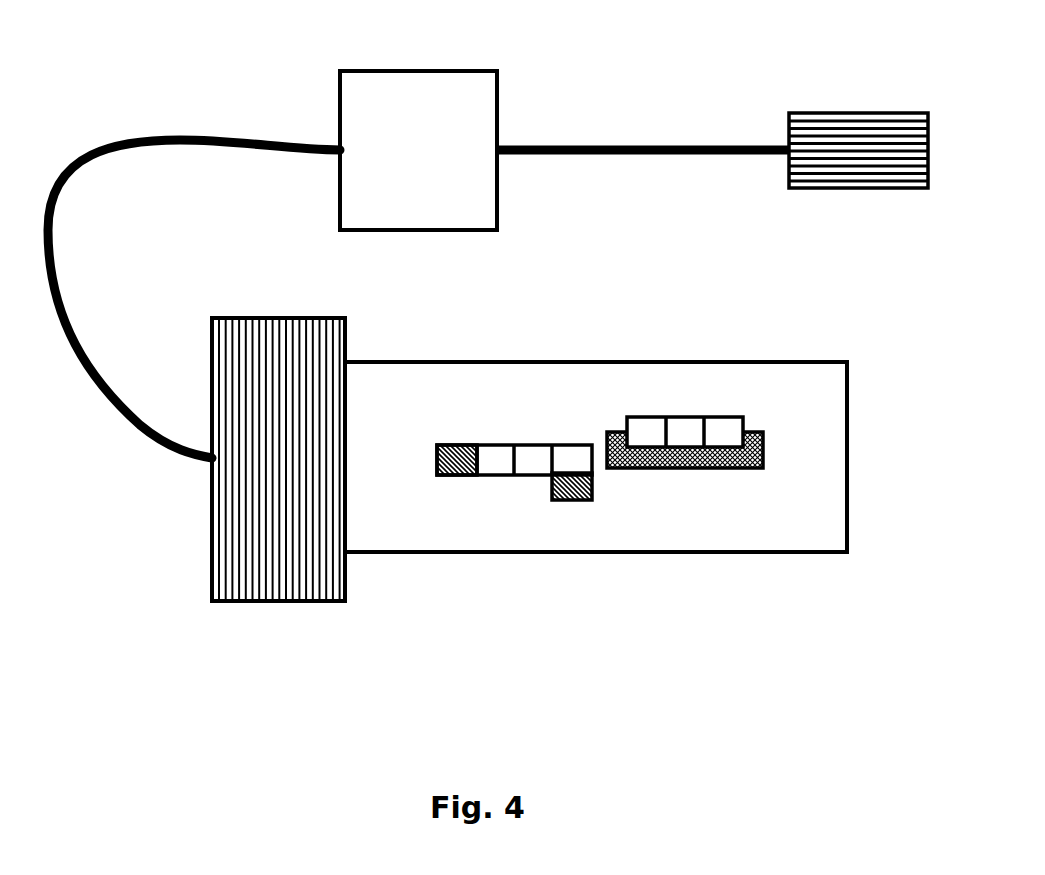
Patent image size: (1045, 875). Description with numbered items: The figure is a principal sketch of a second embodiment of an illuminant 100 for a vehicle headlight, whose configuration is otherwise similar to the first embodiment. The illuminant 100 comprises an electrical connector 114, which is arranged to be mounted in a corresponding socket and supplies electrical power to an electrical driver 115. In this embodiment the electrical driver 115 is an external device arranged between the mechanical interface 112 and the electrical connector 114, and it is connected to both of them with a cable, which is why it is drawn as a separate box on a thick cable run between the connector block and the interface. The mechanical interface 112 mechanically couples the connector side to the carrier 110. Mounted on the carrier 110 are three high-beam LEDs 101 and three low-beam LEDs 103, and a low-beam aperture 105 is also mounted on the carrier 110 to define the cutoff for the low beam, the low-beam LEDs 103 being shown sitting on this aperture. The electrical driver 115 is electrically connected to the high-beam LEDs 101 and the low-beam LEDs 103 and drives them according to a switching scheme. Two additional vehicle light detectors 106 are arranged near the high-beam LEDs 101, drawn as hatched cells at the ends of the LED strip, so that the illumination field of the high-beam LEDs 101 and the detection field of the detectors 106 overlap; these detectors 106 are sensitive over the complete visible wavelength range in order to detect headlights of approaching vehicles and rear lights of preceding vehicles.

The illuminant 100 is at (134, 89).
The high-beam LEDs 101 is at (494, 445).
The low-beam LEDs 103 is at (648, 417).
The low-beam aperture 105 is at (640, 469).
The vehicle light detectors 106 is at (548, 483).
The carrier 110 is at (790, 532).
The mechanical interface 112 is at (322, 599).
The electrical connector 114 is at (848, 190).
The electrical driver 115 is at (494, 80).